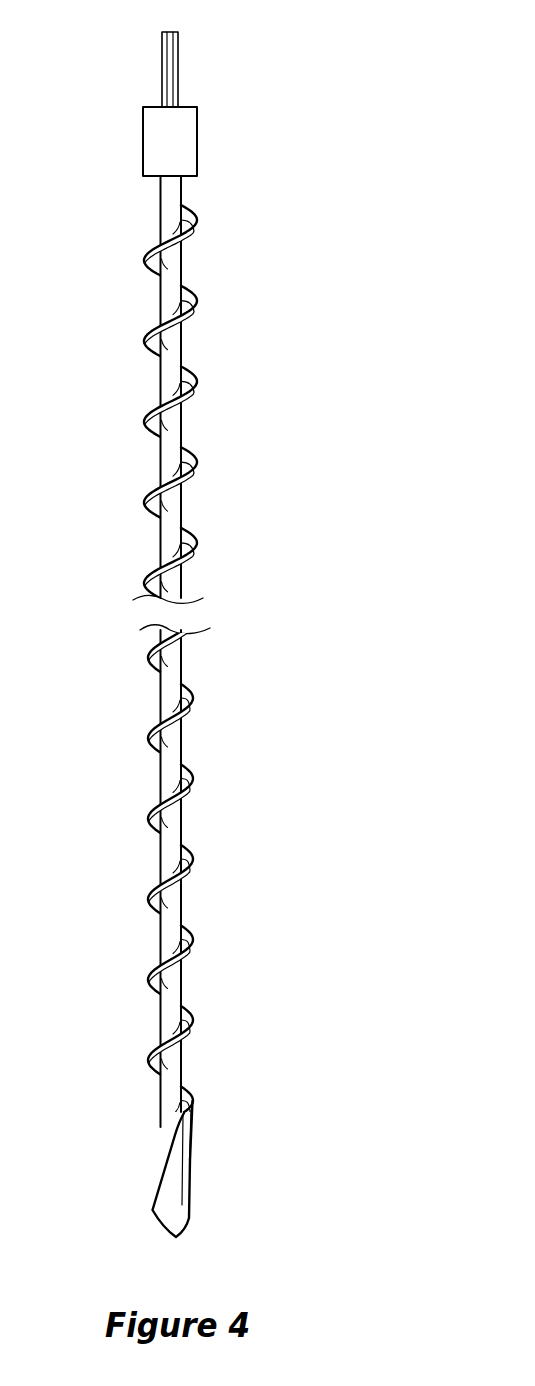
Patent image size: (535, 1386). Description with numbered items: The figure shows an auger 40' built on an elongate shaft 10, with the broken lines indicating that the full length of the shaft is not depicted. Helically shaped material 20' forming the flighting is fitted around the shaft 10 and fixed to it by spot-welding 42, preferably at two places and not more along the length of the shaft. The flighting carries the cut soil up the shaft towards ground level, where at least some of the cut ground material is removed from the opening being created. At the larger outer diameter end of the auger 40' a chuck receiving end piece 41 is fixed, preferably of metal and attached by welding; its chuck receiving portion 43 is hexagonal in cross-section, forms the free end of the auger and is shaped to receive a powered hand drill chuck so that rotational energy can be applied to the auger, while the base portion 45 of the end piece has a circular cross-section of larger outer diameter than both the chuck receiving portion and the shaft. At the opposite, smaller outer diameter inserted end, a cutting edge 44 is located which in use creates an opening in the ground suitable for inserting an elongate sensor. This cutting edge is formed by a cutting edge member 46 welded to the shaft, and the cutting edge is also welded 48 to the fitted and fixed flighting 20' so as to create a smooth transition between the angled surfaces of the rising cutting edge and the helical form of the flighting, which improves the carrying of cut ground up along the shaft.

The auger 40' is at (218, 621).
The shaft 10 is at (146, 210).
The chuck receiving end piece 41 is at (207, 32).
The chuck receiving portion 43 is at (131, 71).
The hub 45 is at (143, 142).
The helically shaped material 20' is at (189, 663).
The spot-welding 42 is at (165, 231).
The cutting edge 44 is at (190, 1228).
The cutting edge member 46 is at (180, 1181).
The weld 48 is at (190, 1137).